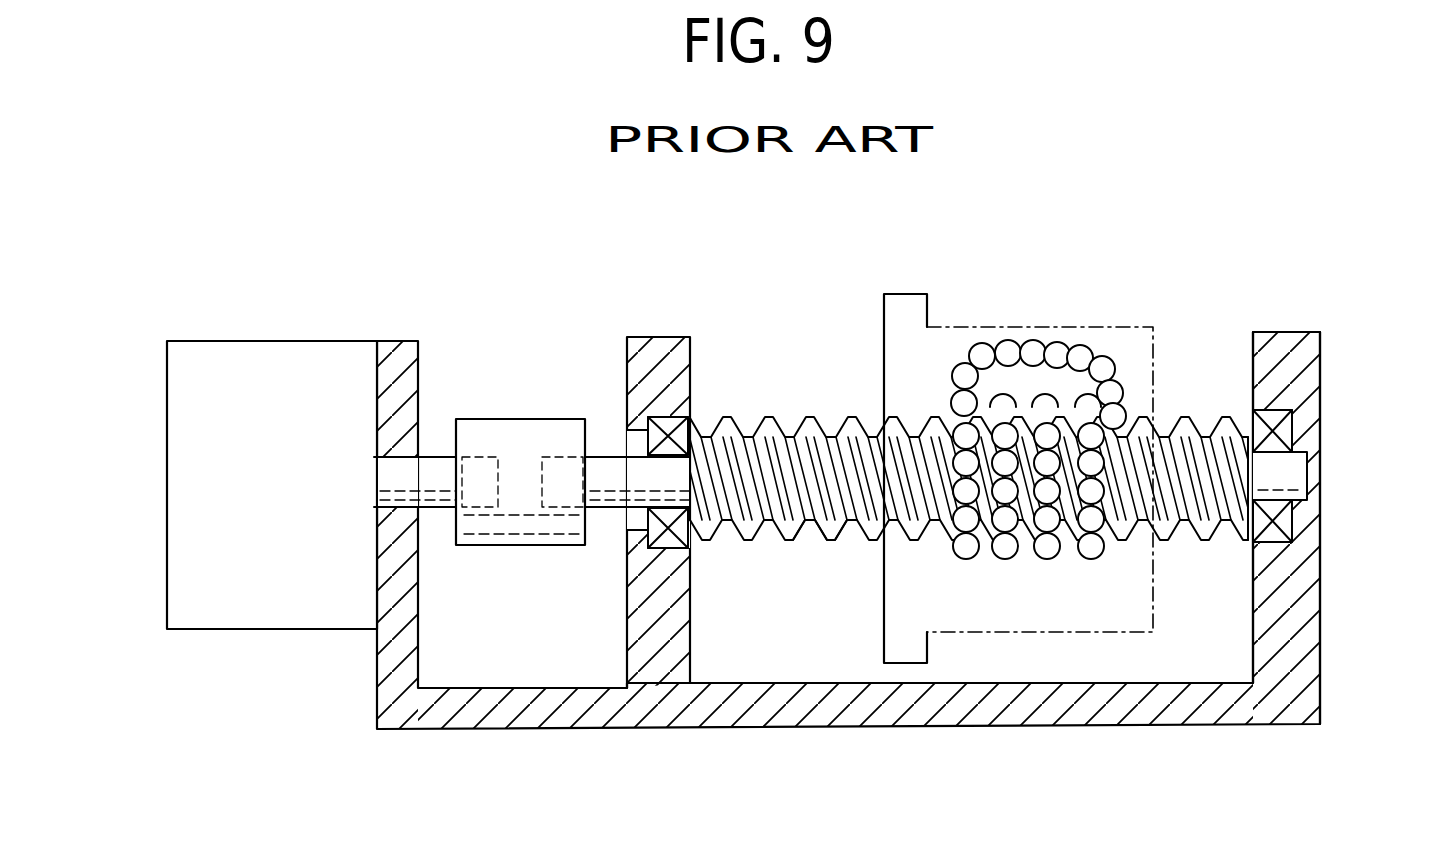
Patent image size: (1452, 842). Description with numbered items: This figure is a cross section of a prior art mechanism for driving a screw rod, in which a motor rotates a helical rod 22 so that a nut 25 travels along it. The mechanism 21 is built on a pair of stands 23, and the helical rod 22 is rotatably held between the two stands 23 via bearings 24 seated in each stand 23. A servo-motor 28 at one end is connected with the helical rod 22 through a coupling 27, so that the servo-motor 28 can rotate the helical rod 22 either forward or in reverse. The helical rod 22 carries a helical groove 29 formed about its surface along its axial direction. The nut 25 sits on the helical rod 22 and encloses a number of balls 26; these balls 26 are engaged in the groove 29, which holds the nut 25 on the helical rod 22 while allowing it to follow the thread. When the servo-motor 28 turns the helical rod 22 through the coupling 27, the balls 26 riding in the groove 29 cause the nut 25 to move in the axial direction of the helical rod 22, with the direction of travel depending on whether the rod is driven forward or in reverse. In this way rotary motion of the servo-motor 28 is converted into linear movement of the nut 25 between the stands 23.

The housing 21 is at (1190, 357).
The helical rod 22 is at (815, 417).
The stands 23 is at (652, 362).
The bearings 24 is at (670, 425).
The nut 25 is at (910, 300).
The balls 26 is at (1058, 352).
The coupling 27 is at (505, 430).
The servo-motor 28 is at (222, 358).
The helical groove 29 is at (820, 540).